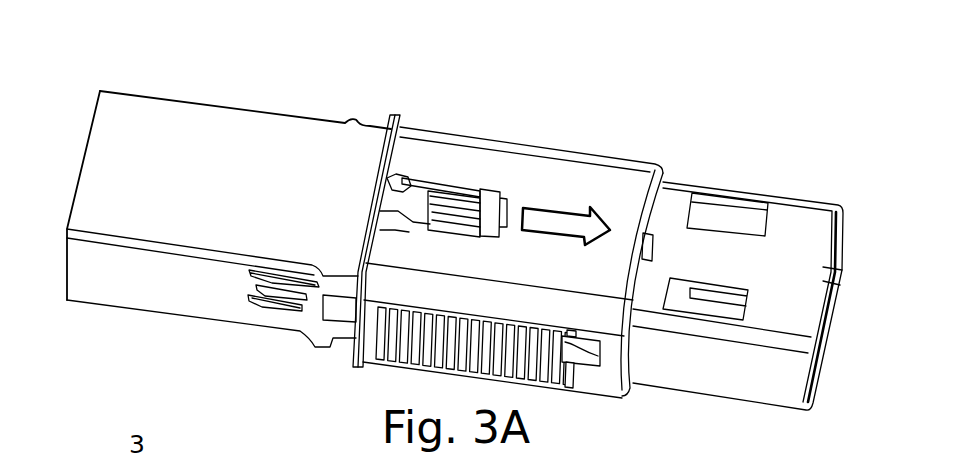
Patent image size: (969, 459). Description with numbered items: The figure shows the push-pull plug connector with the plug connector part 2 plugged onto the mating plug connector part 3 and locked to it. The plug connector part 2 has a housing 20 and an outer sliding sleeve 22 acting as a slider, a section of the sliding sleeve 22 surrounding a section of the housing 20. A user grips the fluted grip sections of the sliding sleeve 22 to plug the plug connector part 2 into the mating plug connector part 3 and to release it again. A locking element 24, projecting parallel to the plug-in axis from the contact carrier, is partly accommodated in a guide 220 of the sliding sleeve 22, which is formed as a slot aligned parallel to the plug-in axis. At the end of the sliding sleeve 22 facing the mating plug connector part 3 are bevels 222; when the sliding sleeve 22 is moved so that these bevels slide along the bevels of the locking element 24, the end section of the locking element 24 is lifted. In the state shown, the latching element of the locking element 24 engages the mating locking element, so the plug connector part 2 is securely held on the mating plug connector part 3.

The plug connector part 2 is at (604, 229).
The mating plug connector part 3 is at (201, 88).
The housing 20 is at (800, 231).
The sliding sleeve 22 is at (516, 223).
The locking element 24 is at (452, 205).
The guide 220 is at (437, 190).
The bevels 222 is at (411, 180).